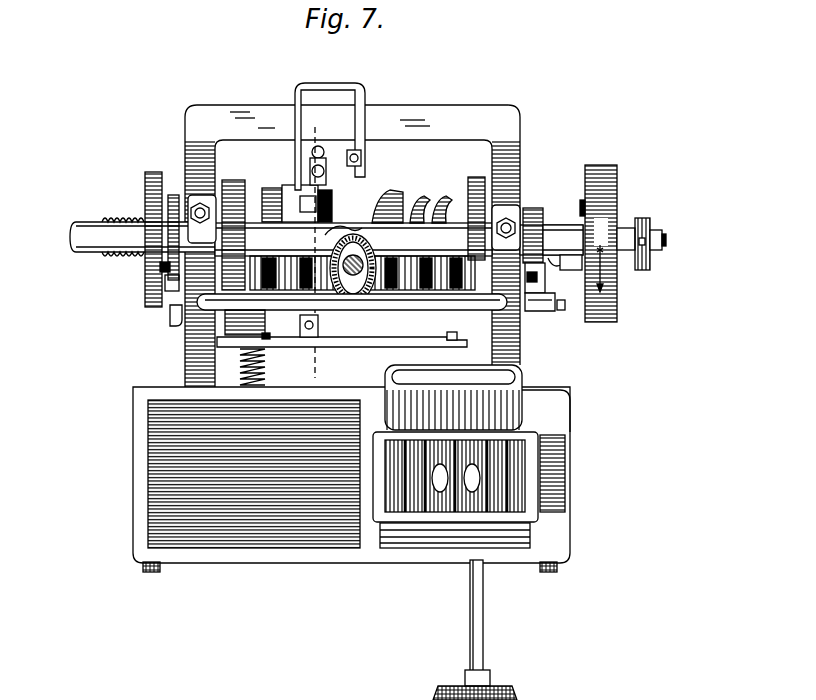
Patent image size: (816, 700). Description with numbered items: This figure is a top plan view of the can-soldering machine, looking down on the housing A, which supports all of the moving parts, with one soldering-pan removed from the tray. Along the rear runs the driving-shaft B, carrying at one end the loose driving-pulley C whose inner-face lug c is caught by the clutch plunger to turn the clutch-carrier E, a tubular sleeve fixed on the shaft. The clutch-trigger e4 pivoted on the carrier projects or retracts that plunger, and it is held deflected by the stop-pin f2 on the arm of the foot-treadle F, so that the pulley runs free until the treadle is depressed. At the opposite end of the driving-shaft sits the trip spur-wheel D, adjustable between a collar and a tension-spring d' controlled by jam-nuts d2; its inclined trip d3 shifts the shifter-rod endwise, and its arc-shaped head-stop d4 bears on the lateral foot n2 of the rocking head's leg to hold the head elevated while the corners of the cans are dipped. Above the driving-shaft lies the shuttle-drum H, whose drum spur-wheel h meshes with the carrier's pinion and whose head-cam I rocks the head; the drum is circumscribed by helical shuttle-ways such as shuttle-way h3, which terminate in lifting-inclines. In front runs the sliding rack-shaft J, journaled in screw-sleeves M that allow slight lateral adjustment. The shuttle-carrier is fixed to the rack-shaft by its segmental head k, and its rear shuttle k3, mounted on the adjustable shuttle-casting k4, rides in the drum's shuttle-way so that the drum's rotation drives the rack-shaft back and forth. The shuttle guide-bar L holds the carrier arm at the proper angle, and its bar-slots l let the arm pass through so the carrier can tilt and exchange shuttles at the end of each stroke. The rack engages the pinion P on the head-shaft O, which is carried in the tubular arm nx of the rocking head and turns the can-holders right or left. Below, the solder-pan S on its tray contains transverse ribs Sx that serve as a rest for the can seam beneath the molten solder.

The housing A is at (352, 246).
The driving-shaft B is at (666, 238).
The driving-pulley C is at (623, 243).
The lug c is at (582, 200).
The trip spur-wheel D is at (150, 292).
The jam-nuts d2 is at (125, 218).
The tension-spring d' is at (123, 267).
The trip d3 is at (160, 272).
The head-stop d4 is at (172, 283).
The clutch-carrier E is at (562, 224).
The clutch-trigger e4 is at (565, 250).
The foot-treadle F is at (485, 615).
The stop-pin f2 is at (536, 312).
The shuttle-drum H is at (374, 200).
The drum spur-wheel h is at (475, 180).
The shuttle-way h3 is at (450, 198).
The head-cam I is at (235, 190).
The bracket i is at (321, 136).
The bracket arm i' is at (359, 138).
The sliding rack-shaft J is at (85, 238).
The segmental head k is at (307, 203).
The rear shuttle k3 is at (290, 190).
The shuttle-casting k4 is at (318, 326).
The shuttle guide-bar L is at (380, 340).
The bar-slots l is at (266, 333).
The screw-sleeves M is at (177, 205).
The lateral foot n2 is at (170, 316).
The tubular arm nx is at (343, 227).
The head-shaft O is at (366, 258).
The pinion P is at (320, 240).
The solder-pan S is at (351, 479).
The transverse ribs Sx is at (505, 480).
The lever u is at (316, 246).